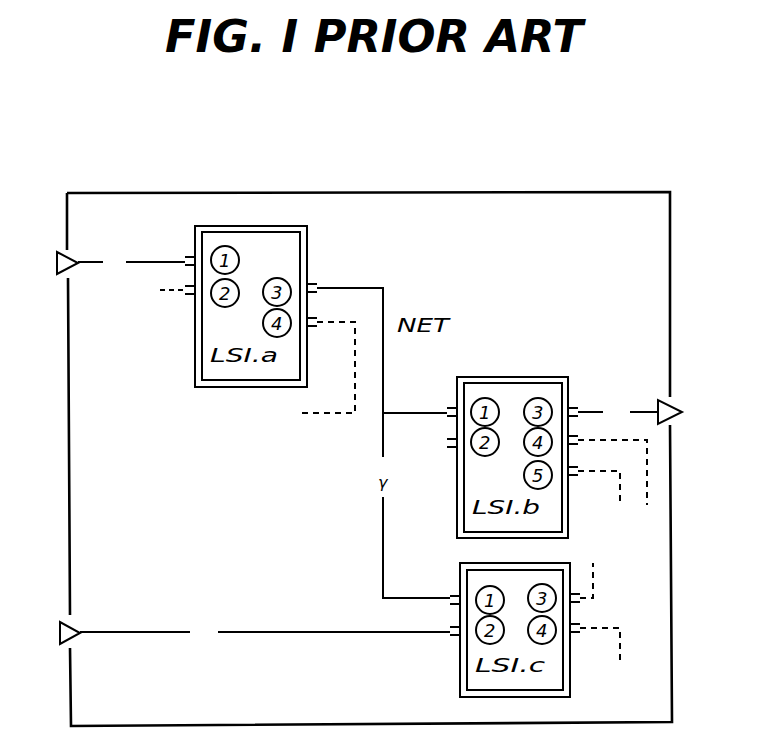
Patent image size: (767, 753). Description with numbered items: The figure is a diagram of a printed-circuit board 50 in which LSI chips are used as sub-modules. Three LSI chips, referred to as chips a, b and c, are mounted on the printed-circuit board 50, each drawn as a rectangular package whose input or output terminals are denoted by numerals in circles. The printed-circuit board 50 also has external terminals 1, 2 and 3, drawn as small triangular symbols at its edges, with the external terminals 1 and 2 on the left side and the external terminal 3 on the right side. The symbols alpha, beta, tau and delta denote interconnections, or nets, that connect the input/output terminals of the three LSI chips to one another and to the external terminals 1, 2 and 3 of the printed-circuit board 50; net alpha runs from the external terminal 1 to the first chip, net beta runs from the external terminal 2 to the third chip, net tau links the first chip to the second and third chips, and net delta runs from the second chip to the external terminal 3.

The printed-circuit board 50 is at (668, 282).
The external terminal 1 is at (101, 250).
The external terminal 2 is at (236, 618).
The external terminal 3 is at (650, 400).